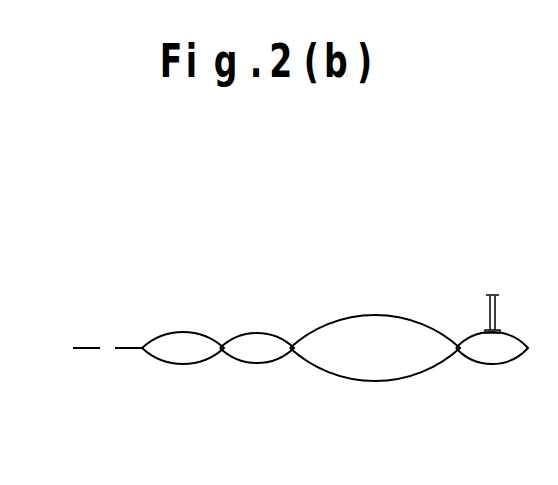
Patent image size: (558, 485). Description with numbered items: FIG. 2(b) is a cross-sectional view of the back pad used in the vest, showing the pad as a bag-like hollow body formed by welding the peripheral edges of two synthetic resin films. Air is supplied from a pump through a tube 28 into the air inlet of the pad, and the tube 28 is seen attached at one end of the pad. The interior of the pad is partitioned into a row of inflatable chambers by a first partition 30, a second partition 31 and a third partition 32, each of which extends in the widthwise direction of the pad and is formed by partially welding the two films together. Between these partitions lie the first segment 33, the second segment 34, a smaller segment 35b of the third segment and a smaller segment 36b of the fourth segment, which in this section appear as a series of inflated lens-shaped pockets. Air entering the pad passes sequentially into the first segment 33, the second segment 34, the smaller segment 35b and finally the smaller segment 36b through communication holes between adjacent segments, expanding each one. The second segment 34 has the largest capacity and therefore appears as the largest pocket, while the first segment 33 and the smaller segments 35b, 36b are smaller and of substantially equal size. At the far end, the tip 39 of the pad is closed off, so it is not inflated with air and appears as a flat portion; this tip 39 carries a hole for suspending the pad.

The tube 28 is at (498, 303).
The first partition 30 is at (460, 340).
The second partition 31 is at (293, 343).
The third partition 32 is at (223, 342).
The first segment 33 is at (492, 358).
The second segment 34 is at (370, 372).
The smaller segment 35b is at (253, 358).
The smaller segment 36b is at (180, 360).
The tip 39 is at (85, 348).